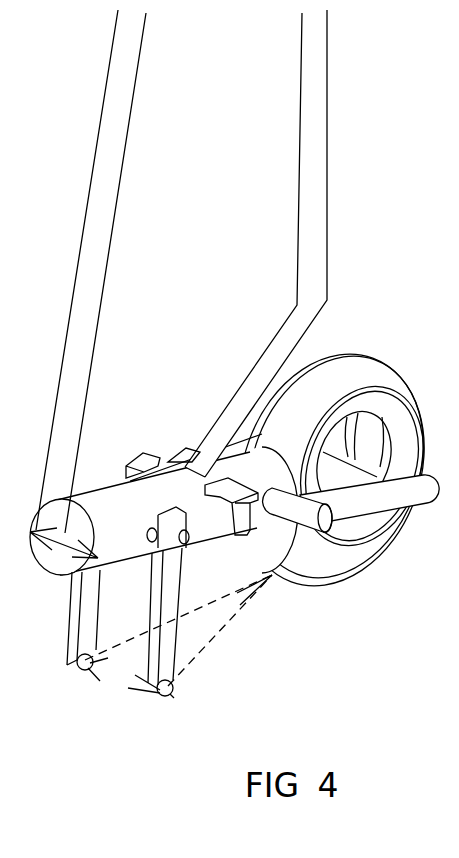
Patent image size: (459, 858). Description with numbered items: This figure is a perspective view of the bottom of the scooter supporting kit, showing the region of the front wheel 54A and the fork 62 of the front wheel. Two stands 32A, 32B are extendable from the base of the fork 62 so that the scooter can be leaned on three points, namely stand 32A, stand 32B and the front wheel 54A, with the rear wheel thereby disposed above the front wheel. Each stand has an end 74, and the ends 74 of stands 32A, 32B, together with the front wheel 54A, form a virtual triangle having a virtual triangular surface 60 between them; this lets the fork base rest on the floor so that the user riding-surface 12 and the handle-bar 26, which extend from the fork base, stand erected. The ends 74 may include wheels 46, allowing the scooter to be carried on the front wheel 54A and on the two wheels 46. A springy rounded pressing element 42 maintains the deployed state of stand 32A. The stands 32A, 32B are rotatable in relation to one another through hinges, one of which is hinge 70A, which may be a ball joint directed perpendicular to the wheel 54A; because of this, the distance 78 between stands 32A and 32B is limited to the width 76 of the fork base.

The riding surface 12 is at (312, 168).
The handle-bar 26 is at (104, 260).
The springy rounded pressing element 42 is at (152, 530).
The hinge 70A is at (185, 532).
The width of fork base 76 is at (55, 570).
The stand 32B is at (72, 621).
The end of stand 74 is at (80, 665).
The distance between stands 78 is at (115, 675).
The wheel 46 is at (166, 697).
The stand 32A is at (172, 660).
The virtual triangular surface 60 is at (232, 623).
The fork of front wheel 62 is at (380, 500).
The front wheel 54A is at (358, 548).